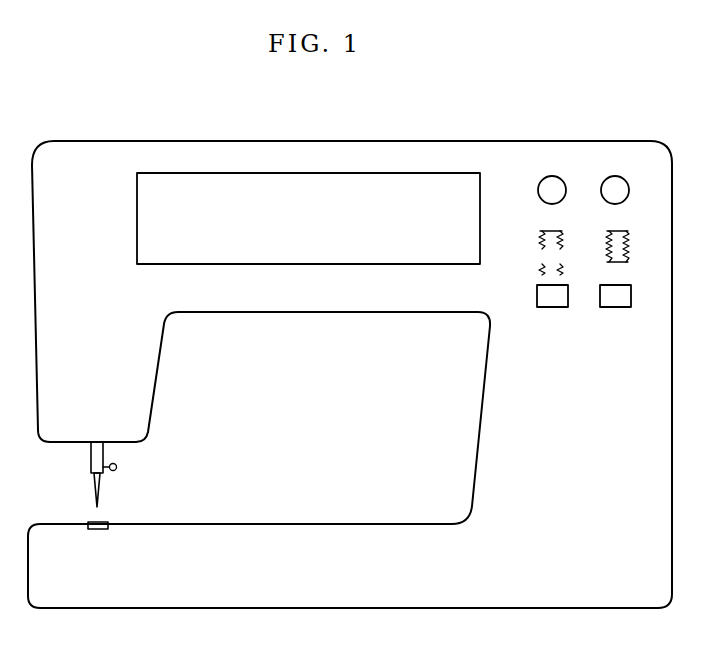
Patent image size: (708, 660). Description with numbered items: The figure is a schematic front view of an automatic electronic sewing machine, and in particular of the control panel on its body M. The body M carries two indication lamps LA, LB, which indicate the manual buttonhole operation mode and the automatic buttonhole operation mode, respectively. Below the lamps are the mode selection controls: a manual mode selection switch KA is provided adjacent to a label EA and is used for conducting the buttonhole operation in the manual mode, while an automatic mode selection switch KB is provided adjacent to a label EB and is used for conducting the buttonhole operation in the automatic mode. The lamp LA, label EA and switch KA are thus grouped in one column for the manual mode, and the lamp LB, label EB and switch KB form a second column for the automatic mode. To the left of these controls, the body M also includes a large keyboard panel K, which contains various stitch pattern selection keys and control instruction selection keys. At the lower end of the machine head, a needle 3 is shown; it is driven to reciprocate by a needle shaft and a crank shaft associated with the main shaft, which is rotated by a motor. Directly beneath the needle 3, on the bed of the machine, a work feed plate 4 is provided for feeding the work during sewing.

The automatic electronic sewing machine body M is at (473, 141).
The keyboard panel K is at (137, 216).
The indication lamp LA is at (552, 176).
The indication lamp LB is at (615, 176).
The label EA is at (540, 240).
The label EB is at (628, 248).
The manual mode selection switch KA is at (550, 307).
The automatic mode selection switch KB is at (614, 307).
The needle 3 is at (101, 482).
The work feed plate 4 is at (96, 522).